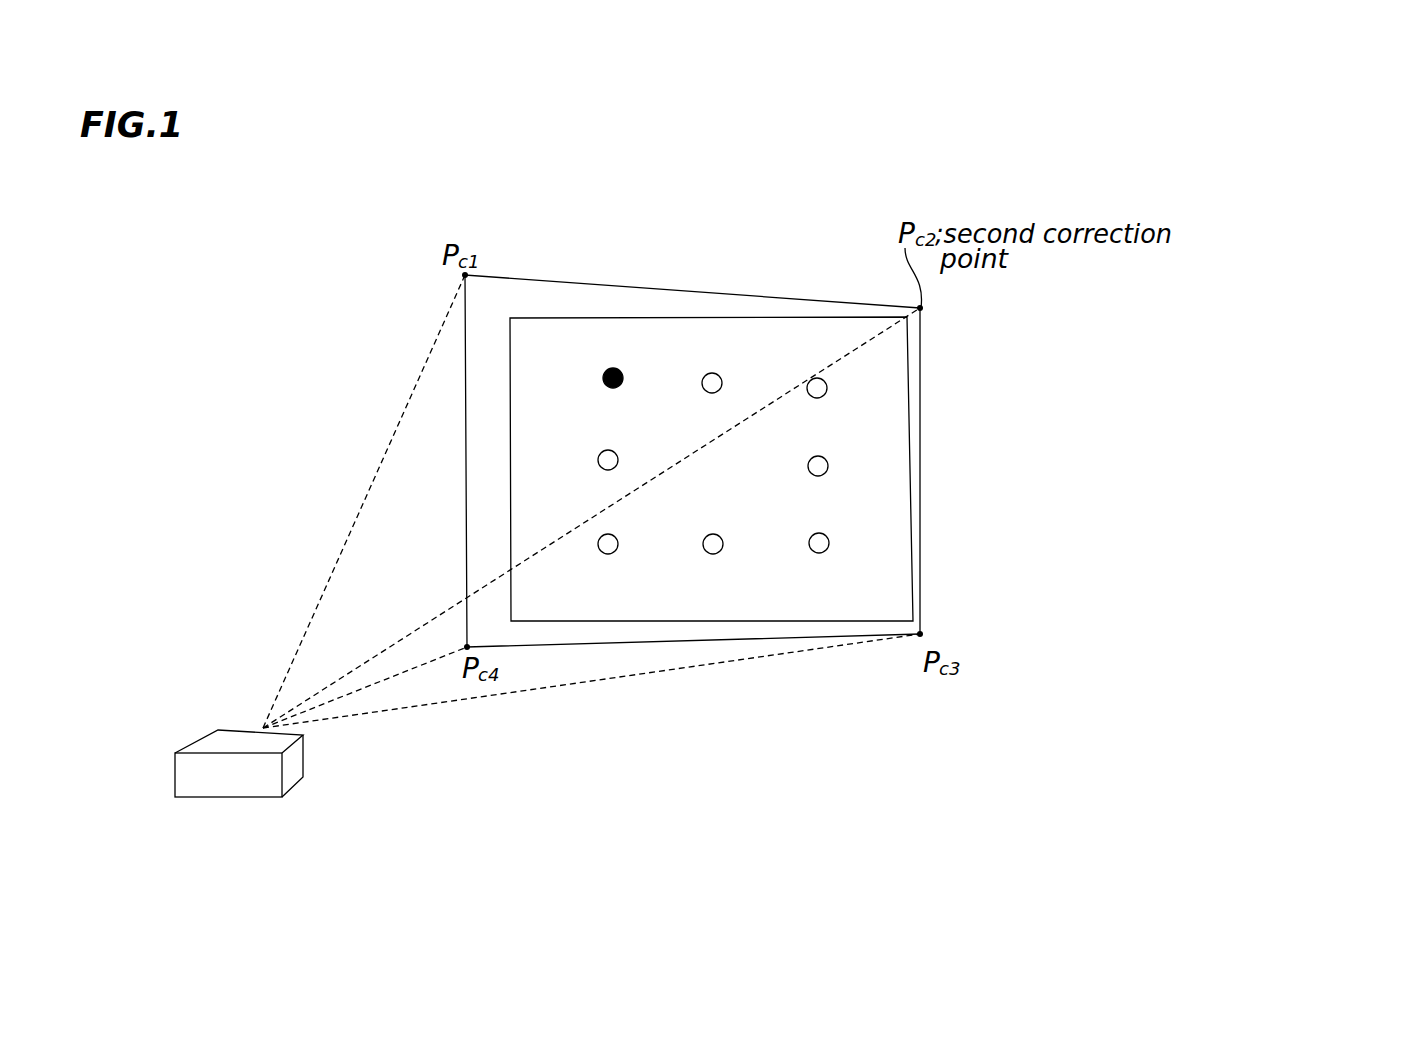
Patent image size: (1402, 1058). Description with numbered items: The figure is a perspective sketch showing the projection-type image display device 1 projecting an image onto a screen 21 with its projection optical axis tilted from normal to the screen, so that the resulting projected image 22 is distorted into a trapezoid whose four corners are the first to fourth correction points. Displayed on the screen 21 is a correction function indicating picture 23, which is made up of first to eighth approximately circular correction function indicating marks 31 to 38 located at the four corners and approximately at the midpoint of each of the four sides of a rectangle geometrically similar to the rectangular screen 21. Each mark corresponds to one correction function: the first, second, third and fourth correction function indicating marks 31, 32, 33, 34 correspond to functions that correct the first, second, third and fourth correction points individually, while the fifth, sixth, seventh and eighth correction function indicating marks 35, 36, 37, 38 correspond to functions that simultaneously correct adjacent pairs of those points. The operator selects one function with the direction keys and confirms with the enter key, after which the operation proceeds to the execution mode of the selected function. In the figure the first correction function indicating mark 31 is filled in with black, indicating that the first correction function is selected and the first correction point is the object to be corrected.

The projection-type image display device 1 is at (298, 767).
The screen 21 is at (919, 594).
The projected image 22 is at (532, 279).
The correction function indicating picture 23 is at (886, 391).
The first correction function indicating mark 31 is at (612, 367).
The second correction function indicating mark 32 is at (824, 381).
The third correction function indicating mark 33 is at (829, 540).
The fourth correction function indicating mark 34 is at (606, 554).
The fifth correction function indicating mark 35 is at (712, 373).
The sixth correction function indicating mark 36 is at (826, 459).
The seventh correction function indicating mark 37 is at (712, 554).
The eighth correction function indicating mark 38 is at (598, 460).